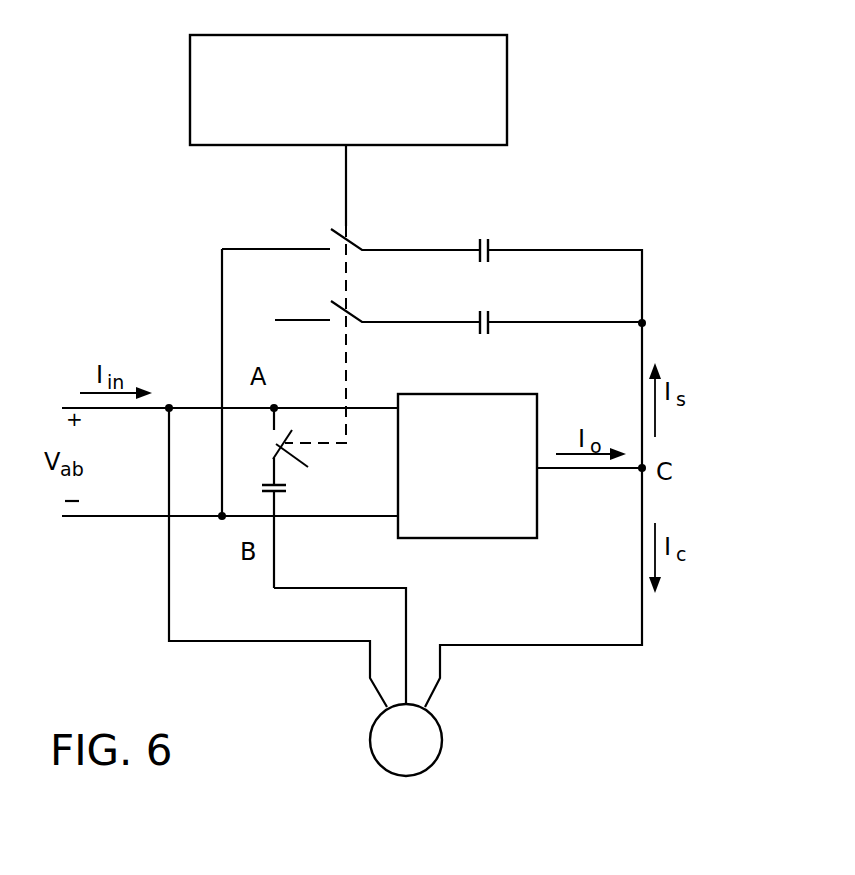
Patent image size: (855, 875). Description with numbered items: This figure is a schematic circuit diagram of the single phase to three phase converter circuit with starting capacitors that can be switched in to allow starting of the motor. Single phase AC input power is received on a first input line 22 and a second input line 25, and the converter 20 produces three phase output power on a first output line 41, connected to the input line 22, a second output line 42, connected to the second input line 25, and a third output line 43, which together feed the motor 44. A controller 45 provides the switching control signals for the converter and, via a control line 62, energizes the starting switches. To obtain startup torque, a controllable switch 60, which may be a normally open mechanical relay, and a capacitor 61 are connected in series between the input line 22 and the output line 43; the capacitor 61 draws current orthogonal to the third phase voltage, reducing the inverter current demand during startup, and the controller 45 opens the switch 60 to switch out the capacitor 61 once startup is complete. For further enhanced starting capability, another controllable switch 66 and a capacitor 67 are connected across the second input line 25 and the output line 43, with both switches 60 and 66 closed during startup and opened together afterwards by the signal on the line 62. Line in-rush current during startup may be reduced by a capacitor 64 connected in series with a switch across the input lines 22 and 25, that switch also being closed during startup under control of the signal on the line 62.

The controller 45 is at (507, 101).
The control line 62 is at (346, 189).
The controllable switch 66 is at (353, 247).
The capacitor 67 is at (489, 245).
The controllable switch 60 is at (353, 319).
The capacitor 61 is at (489, 318).
The converter 20 is at (487, 394).
The first input line 22 is at (199, 407).
The second input line 25 is at (105, 518).
The capacitor 64 is at (267, 480).
The second output line 42 is at (276, 565).
The first output line 41 is at (165, 596).
The third output line 43 is at (639, 607).
The motor 44 is at (443, 726).